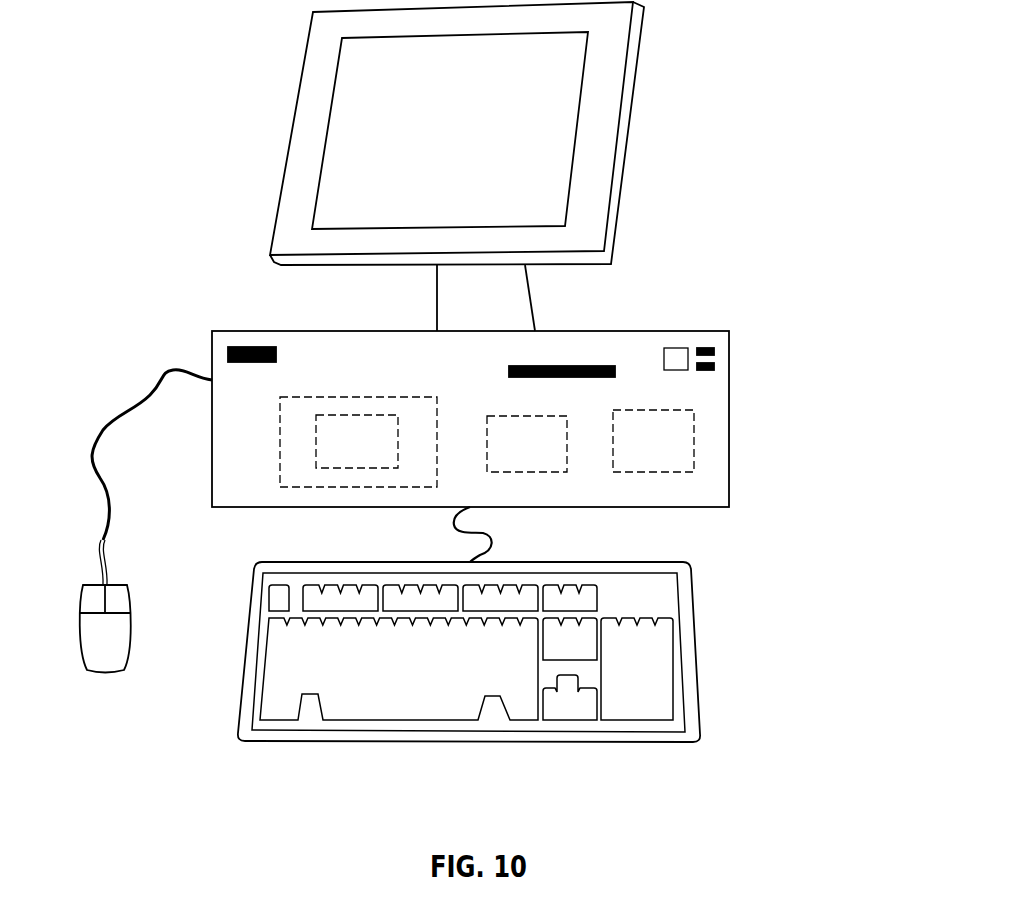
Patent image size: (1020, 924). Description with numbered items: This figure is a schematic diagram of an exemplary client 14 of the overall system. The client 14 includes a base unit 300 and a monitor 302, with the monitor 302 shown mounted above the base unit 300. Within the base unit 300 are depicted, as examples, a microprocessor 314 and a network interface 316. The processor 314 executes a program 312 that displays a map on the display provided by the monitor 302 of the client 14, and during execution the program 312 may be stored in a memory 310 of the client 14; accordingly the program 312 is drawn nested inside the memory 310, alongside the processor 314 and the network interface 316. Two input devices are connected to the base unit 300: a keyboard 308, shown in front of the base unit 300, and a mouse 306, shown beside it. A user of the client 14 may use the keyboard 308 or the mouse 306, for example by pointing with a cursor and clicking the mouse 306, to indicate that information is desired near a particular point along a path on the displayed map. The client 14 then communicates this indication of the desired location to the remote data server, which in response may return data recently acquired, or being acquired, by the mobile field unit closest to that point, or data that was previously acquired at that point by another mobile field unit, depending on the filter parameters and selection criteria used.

The client 14 is at (180, 175).
The base unit 300 is at (510, 409).
The monitor 302 is at (505, 166).
The mouse 306 is at (152, 521).
The keyboard 308 is at (513, 643).
The memory 310 is at (351, 421).
The program 312 is at (331, 386).
The microprocessor 314 is at (557, 477).
The network interface 316 is at (710, 429).